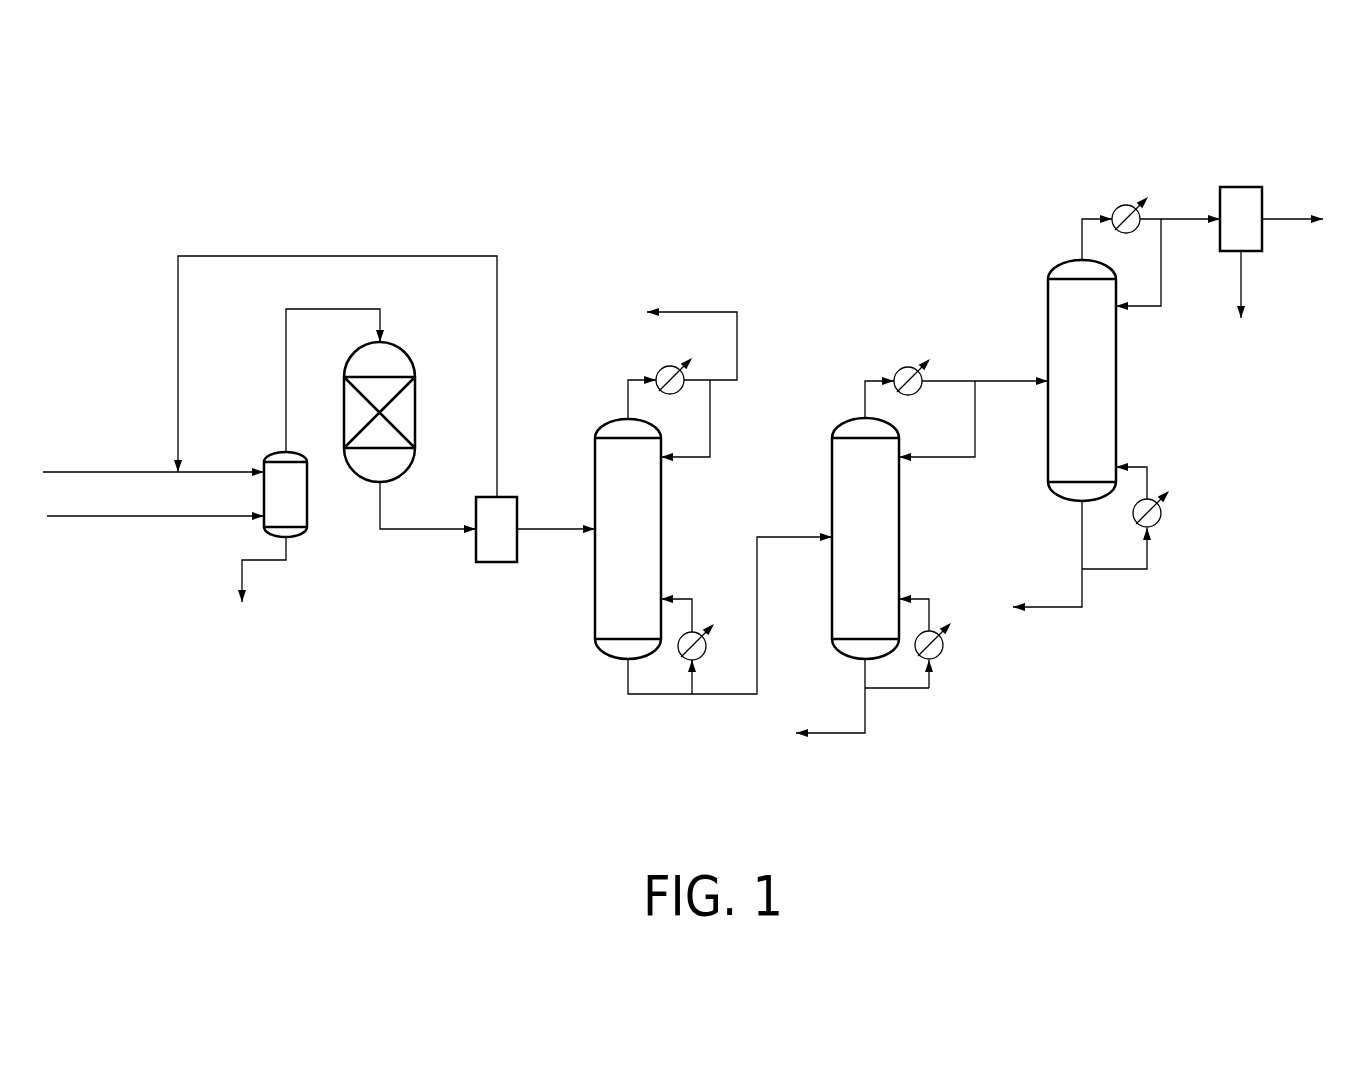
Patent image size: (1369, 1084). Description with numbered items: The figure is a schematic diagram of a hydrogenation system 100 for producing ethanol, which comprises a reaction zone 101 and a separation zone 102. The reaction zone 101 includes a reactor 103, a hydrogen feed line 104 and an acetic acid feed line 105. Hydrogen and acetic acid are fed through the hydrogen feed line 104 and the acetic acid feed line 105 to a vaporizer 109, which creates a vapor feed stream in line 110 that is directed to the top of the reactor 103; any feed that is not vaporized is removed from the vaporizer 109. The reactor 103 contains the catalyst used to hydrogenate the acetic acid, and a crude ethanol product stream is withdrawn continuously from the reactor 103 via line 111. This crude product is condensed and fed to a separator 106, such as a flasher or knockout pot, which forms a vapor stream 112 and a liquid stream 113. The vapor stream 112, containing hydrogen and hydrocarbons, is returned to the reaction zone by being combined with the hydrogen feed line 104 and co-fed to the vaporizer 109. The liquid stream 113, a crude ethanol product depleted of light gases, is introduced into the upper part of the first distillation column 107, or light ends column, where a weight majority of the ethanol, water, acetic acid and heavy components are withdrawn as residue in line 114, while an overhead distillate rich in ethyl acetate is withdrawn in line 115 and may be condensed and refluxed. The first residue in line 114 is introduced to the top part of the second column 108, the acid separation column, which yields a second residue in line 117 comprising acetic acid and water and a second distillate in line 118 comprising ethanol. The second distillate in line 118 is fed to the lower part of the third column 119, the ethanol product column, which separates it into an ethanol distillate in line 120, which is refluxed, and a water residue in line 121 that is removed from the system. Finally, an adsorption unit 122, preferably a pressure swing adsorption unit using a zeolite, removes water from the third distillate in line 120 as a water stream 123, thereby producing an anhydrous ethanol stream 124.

The hydrogenation system 100 is at (737, 203).
The reaction zone 101 is at (300, 693).
The separation zone 102 is at (1058, 755).
The reactor 103 is at (400, 362).
The hydrogen feed line 104 is at (118, 472).
The acetic acid feed line 105 is at (142, 516).
The separator 106 is at (505, 488).
The first distillation column 107 is at (638, 513).
The second column 108 is at (878, 530).
The vaporizer 109 is at (295, 517).
The vapor feed stream line 110 is at (317, 308).
The crude ethanol product line 111 is at (408, 529).
The vapor stream 112 is at (497, 295).
The liquid stream 113 is at (543, 529).
The first residue line 114 is at (658, 694).
The first distillate line 115 is at (737, 332).
The second residue line 117 is at (865, 715).
The second distillate line 118 is at (952, 378).
The third column 119 is at (1090, 390).
The third distillate line 120 is at (1173, 219).
The third residue line 121 is at (1082, 593).
The adsorption unit 122 is at (1239, 197).
The water stream 123 is at (1293, 217).
The anhydrous ethanol stream 124 is at (1241, 277).